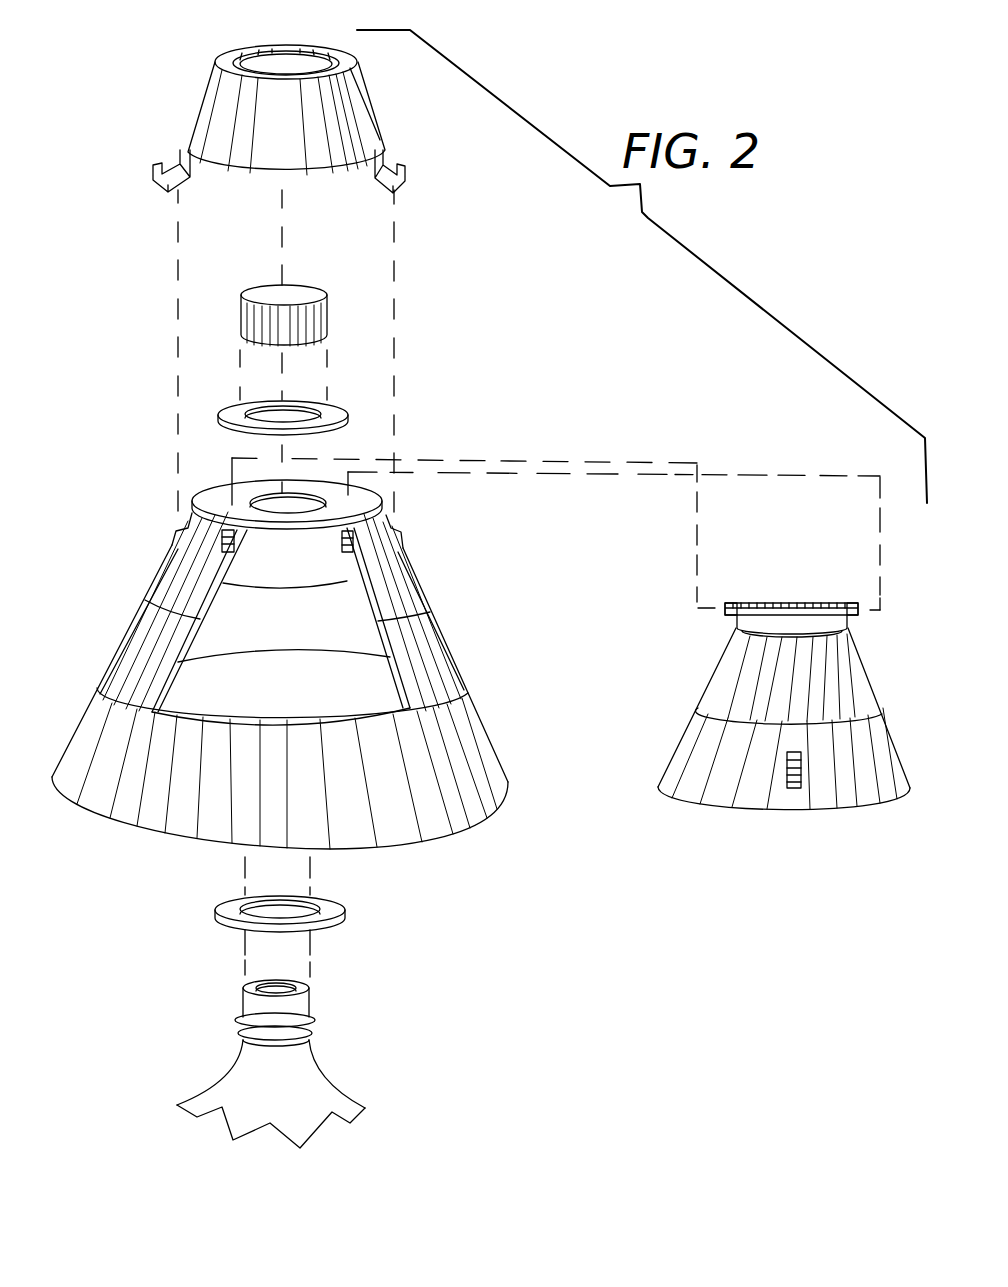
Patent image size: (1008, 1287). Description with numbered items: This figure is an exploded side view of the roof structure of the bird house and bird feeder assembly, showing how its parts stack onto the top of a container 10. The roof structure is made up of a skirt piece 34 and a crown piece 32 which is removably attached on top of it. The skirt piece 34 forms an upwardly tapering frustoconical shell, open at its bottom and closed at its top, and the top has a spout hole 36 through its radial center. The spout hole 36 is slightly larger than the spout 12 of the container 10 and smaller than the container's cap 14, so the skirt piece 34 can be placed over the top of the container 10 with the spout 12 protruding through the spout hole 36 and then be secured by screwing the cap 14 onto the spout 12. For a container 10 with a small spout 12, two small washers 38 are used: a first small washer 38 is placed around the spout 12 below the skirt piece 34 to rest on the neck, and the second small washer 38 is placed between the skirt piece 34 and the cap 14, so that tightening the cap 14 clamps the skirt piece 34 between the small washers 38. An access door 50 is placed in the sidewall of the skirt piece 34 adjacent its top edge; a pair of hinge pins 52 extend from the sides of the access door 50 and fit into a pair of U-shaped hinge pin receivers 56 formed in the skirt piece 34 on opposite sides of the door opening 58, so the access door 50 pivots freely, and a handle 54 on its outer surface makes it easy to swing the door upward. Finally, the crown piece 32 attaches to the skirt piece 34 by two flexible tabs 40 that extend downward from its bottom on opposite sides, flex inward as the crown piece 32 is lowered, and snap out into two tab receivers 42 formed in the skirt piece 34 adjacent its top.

The container 10 is at (350, 1090).
The spout 12 is at (243, 992).
The cap 14 is at (318, 292).
The crown piece 32 is at (218, 97).
The skirt piece 34 is at (153, 812).
The spout hole 36 is at (278, 502).
The small washers 38 is at (348, 416).
The flexible tabs 40 is at (168, 162).
The tab receivers 42 is at (178, 537).
The access door 50 is at (728, 782).
The hinge pins 52 is at (732, 614).
The handle 54 is at (801, 790).
The hinge pin receivers 56 is at (340, 558).
The door opening 58 is at (205, 688).